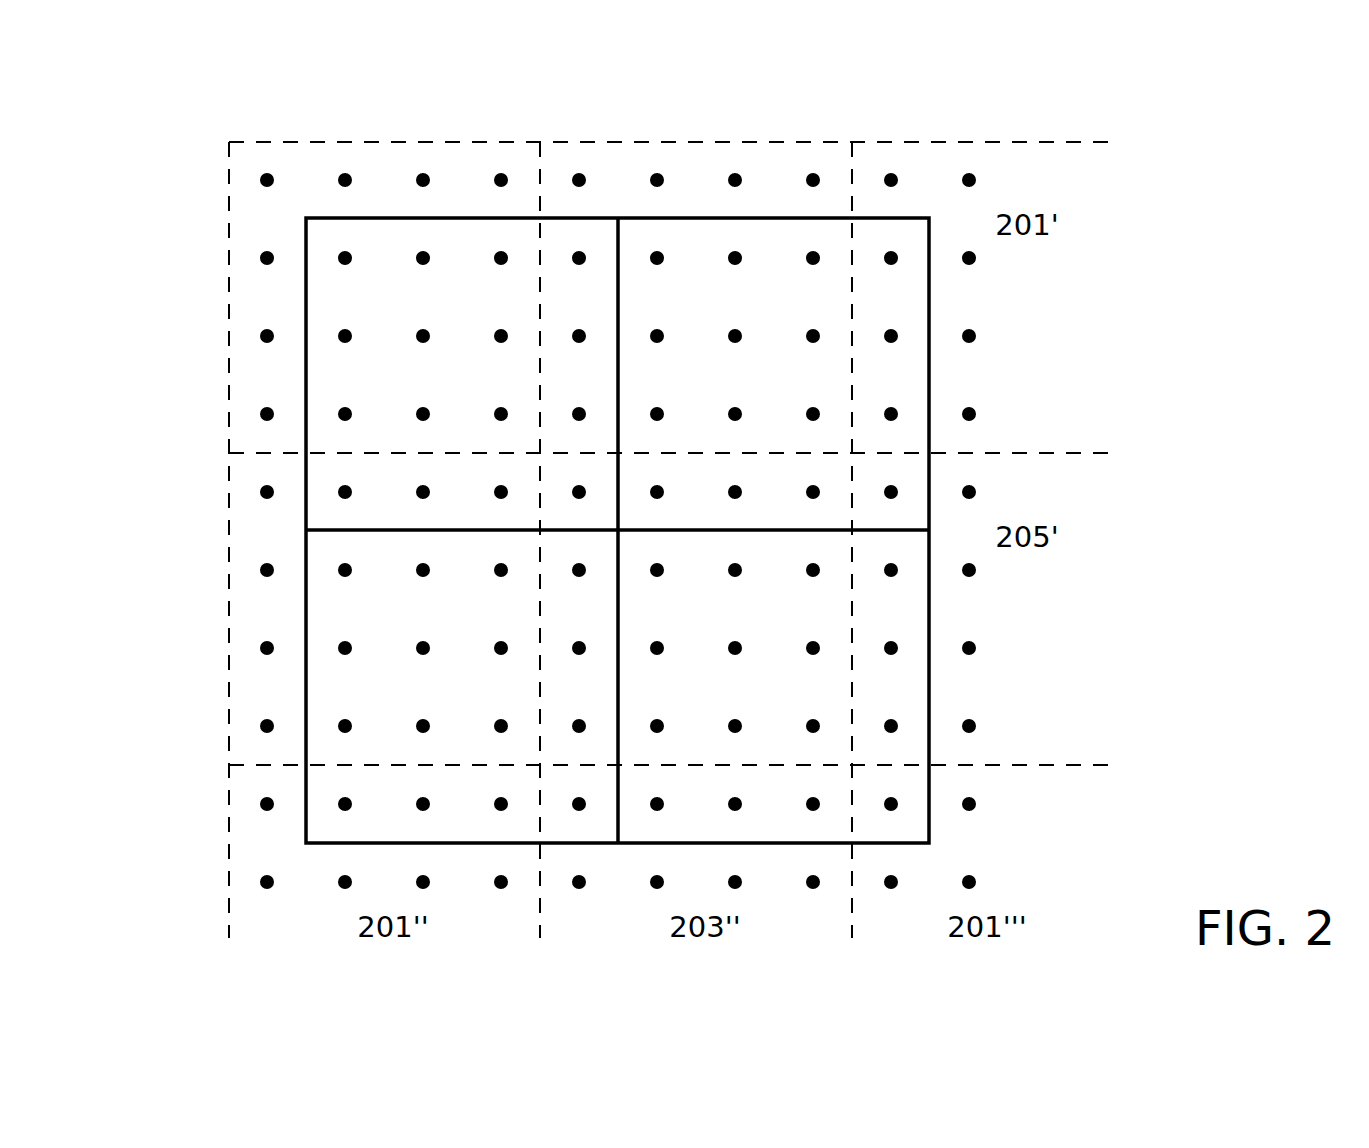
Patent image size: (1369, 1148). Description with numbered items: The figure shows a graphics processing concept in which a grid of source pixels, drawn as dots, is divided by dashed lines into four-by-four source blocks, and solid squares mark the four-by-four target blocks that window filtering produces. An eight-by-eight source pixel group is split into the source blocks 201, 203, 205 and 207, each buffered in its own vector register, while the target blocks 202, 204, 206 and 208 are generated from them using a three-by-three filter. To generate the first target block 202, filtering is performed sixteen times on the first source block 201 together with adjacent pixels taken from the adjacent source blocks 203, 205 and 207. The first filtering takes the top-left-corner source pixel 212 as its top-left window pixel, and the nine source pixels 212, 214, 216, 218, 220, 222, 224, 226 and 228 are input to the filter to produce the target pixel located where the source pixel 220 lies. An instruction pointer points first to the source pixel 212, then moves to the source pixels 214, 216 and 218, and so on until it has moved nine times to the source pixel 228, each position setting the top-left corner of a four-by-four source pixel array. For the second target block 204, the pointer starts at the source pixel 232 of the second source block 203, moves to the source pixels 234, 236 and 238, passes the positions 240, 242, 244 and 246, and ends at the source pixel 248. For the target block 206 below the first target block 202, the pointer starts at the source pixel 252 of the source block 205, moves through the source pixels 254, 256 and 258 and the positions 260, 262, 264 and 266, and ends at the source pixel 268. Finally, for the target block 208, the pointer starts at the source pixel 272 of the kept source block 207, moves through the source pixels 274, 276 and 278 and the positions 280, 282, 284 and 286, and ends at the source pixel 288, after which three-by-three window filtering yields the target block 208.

The first source block 201 is at (505, 140).
The second source block 203 is at (820, 140).
The first target block 202 is at (306, 385).
The second target block 204 is at (930, 385).
The source block 205 is at (229, 604).
The target block 206 is at (306, 697).
The source block 207 is at (852, 605).
The target block 208 is at (930, 697).
The source pixel 212 is at (267, 172).
The source pixel 214 is at (345, 172).
The source pixel 216 is at (423, 172).
The source pixel 218 is at (262, 259).
The source pixel 220 is at (348, 262).
The source pixel 222 is at (426, 262).
The source pixel 224 is at (262, 337).
The source pixel 226 is at (348, 340).
The source pixel 228 is at (426, 340).
The source pixel 232 is at (579, 172).
The source pixel 234 is at (657, 172).
The source pixel 236 is at (735, 172).
The source pixel 238 is at (579, 265).
The pixel 240 is at (660, 262).
The pixel 242 is at (738, 262).
The pixel 244 is at (579, 343).
The pixel 246 is at (660, 340).
The source pixel 248 is at (738, 340).
The source pixel 252 is at (262, 493).
The source pixel 254 is at (348, 496).
The source pixel 256 is at (426, 496).
The source pixel 258 is at (262, 571).
The pixel 260 is at (348, 574).
The pixel 262 is at (426, 574).
The pixel 264 is at (262, 649).
The pixel 266 is at (348, 652).
The source pixel 268 is at (426, 652).
The source pixel 272 is at (583, 491).
The source pixel 274 is at (660, 496).
The source pixel 276 is at (738, 496).
The source pixel 278 is at (579, 577).
The pixel 280 is at (660, 574).
The pixel 282 is at (738, 574).
The pixel 284 is at (579, 655).
The pixel 286 is at (660, 652).
The source pixel 288 is at (738, 652).